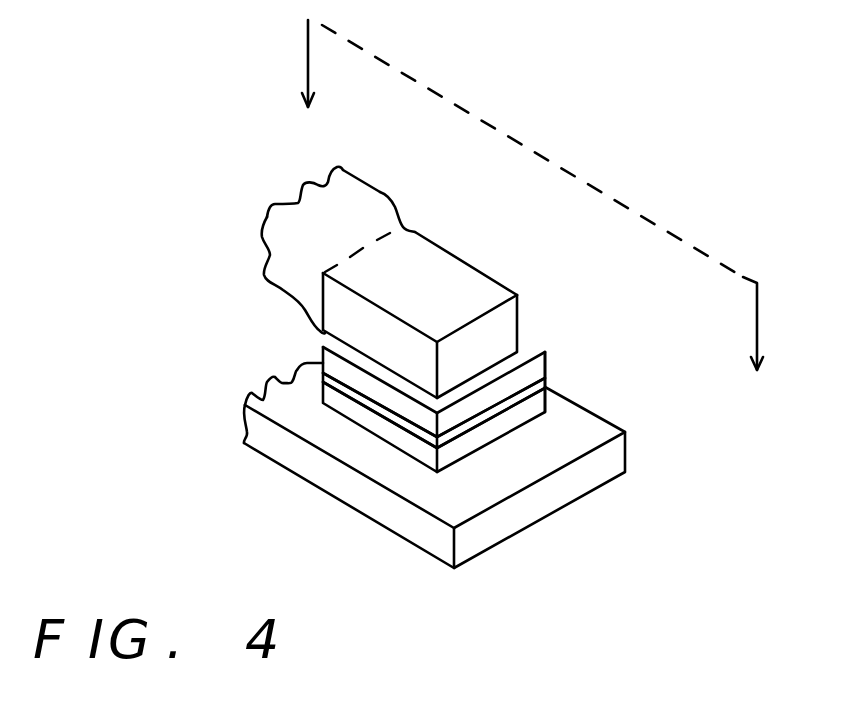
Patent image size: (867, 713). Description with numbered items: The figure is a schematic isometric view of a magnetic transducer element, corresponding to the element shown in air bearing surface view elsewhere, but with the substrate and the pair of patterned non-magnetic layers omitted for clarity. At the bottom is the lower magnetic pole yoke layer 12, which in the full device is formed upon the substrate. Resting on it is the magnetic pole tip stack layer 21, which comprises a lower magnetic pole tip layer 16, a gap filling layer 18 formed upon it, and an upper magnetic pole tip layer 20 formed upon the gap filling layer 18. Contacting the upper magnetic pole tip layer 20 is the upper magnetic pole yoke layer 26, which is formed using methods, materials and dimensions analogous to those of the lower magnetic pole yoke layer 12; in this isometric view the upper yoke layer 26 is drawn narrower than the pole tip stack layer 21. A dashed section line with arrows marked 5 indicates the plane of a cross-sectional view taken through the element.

The section line 5- 5 is at (533, 209).
The lower magnetic pole yoke layer 12 is at (570, 493).
The lower magnetic pole tip layer 16 is at (543, 403).
The gap filling layer 18 is at (543, 380).
The upper magnetic pole tip layer 20 is at (537, 348).
The magnetic pole tip stack layer 21 is at (601, 288).
The upper magnetic pole yoke layer 26 is at (425, 248).